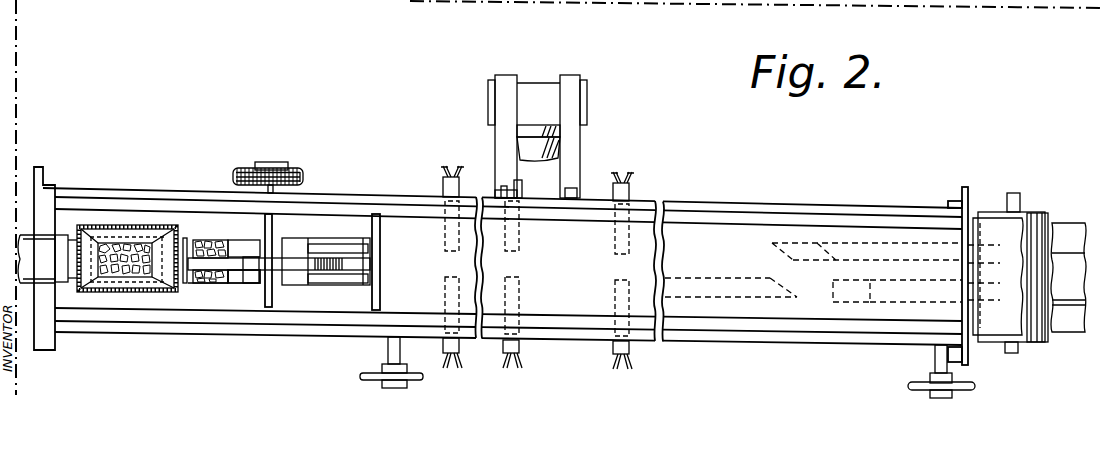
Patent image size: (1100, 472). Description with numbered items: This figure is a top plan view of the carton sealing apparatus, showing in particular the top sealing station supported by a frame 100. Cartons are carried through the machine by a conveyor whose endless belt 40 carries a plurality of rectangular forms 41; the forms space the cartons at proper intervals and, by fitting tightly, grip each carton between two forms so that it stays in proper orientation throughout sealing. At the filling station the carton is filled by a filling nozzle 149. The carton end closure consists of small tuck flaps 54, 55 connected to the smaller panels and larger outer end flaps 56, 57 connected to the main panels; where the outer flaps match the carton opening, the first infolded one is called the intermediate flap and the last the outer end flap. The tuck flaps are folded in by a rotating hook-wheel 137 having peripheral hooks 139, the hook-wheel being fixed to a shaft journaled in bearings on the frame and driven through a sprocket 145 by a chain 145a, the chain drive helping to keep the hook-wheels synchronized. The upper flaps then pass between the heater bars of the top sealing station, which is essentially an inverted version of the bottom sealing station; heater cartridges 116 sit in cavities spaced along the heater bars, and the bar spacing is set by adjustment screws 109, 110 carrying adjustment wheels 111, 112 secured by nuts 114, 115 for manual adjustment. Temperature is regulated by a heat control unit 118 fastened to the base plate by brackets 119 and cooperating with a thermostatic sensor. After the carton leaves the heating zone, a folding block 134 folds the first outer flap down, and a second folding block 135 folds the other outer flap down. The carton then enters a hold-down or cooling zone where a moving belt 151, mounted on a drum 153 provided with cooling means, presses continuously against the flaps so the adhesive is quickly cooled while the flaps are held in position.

The frame 100 is at (57, 175).
The endless belt 40 is at (68, 286).
The filling nozzle 149 is at (115, 226).
The rectangular forms 41 is at (184, 238).
The outer end flap 57 is at (213, 238).
The tuck flap 54 is at (247, 248).
The tuck flap 55 is at (200, 283).
The outer end flap 56 is at (314, 283).
The peripheral hook 139 is at (250, 283).
The hook-wheel 137 is at (297, 270).
The chain 145a is at (242, 167).
The sprocket 145 is at (304, 180).
The adjustment screw 109 is at (387, 347).
The adjustment wheel 111 is at (417, 381).
The nut 114 is at (387, 388).
The heater cartridges 116 is at (525, 180).
The heat control unit 118 is at (542, 90).
The brackets 119 is at (576, 153).
The folding block 135 is at (800, 247).
The folding block 134 is at (727, 293).
The adjustment screw 110 is at (933, 358).
The nut 115 is at (933, 398).
The adjustment wheel 112 is at (965, 392).
The moving belt 151 is at (1012, 245).
The drum 153 is at (1042, 215).